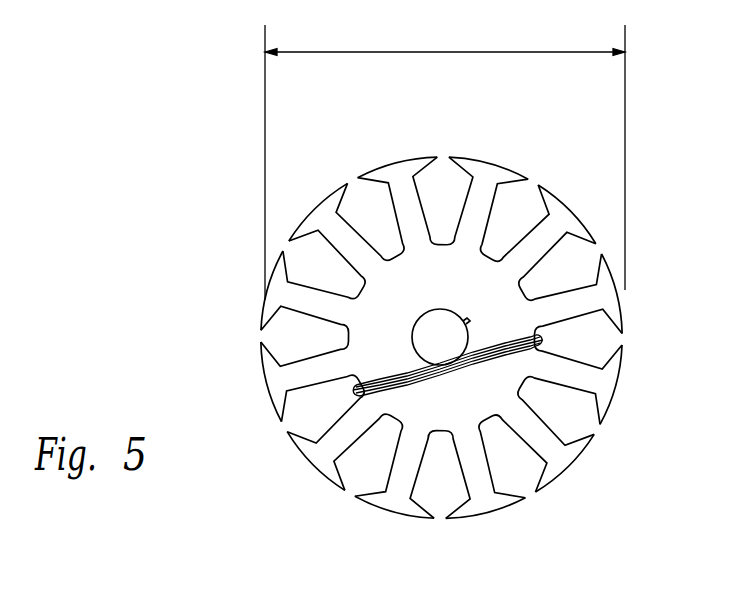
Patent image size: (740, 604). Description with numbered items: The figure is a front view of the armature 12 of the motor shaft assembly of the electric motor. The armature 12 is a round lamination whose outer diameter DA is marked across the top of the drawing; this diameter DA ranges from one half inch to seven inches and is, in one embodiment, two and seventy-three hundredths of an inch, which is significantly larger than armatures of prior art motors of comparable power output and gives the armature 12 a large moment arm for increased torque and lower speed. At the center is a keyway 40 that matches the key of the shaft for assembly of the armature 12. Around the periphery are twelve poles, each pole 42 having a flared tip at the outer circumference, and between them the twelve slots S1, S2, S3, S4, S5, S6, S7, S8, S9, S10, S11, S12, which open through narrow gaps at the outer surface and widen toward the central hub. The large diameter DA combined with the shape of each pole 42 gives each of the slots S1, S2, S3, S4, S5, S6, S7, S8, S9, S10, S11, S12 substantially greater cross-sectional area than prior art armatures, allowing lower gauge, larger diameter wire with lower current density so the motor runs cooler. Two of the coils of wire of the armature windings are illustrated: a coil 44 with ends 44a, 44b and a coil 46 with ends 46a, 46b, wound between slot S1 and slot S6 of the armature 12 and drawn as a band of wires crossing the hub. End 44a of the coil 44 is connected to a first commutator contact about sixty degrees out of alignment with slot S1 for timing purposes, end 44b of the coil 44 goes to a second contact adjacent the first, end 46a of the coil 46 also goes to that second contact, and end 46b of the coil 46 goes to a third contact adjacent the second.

The armature 12 is at (180, 214).
The keyway 40 is at (466, 320).
The pole 42 is at (640, 385).
The coil of wire 44 is at (402, 350).
The end of coil 44 44a is at (373, 371).
The end of coil 44 44b is at (487, 338).
The coil of wire 46 is at (418, 392).
The end of coil 46 46a is at (410, 394).
The end of coil 46 46b is at (497, 362).
The armature diameter DA is at (448, 52).
The slot S1 is at (616, 339).
The slot S2 is at (584, 420).
The slot S3 is at (512, 486).
The slot S4 is at (440, 513).
The slot S5 is at (356, 478).
The slot S6 is at (294, 411).
The slot S7 is at (267, 336).
The slot S8 is at (322, 245).
The slot S9 is at (371, 193).
The slot S10 is at (442, 166).
The slot S11 is at (532, 200).
The slot S12 is at (563, 248).